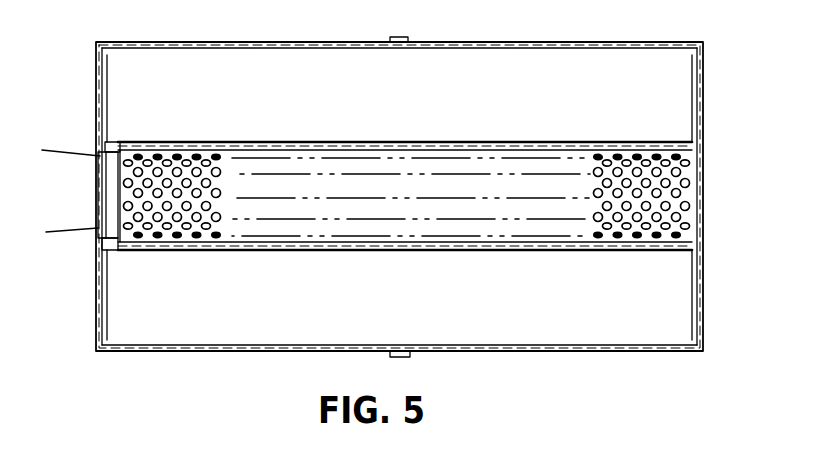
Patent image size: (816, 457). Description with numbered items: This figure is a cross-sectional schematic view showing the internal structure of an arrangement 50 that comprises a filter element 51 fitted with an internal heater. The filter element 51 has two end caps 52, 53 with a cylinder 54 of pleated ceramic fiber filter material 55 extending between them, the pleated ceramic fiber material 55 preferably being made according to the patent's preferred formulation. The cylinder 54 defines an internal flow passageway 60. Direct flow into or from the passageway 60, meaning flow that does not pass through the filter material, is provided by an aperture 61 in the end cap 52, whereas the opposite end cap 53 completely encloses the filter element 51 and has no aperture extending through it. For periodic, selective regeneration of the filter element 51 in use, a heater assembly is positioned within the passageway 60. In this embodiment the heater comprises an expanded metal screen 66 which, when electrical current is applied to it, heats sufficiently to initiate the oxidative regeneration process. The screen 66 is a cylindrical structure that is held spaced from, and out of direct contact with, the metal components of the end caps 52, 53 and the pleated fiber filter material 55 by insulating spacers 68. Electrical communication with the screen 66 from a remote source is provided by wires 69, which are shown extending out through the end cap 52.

The arrangement 50 is at (84, 70).
The filter element 51 is at (538, 39).
The end cap 52 is at (96, 103).
The end cap 53 is at (704, 110).
The cylinder 54 is at (318, 67).
The pleated ceramic fiber filter material 55 is at (471, 126).
The internal flow passageway 60 is at (357, 197).
The aperture 61 is at (99, 163).
The expanded metal screen 66 is at (123, 195).
The insulating spacers 68 is at (128, 142).
The wires 69 is at (75, 149).